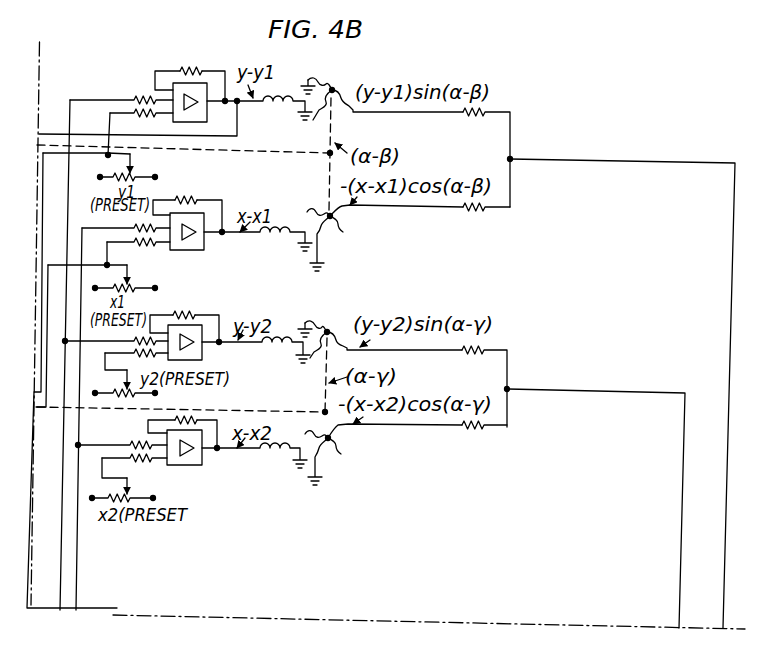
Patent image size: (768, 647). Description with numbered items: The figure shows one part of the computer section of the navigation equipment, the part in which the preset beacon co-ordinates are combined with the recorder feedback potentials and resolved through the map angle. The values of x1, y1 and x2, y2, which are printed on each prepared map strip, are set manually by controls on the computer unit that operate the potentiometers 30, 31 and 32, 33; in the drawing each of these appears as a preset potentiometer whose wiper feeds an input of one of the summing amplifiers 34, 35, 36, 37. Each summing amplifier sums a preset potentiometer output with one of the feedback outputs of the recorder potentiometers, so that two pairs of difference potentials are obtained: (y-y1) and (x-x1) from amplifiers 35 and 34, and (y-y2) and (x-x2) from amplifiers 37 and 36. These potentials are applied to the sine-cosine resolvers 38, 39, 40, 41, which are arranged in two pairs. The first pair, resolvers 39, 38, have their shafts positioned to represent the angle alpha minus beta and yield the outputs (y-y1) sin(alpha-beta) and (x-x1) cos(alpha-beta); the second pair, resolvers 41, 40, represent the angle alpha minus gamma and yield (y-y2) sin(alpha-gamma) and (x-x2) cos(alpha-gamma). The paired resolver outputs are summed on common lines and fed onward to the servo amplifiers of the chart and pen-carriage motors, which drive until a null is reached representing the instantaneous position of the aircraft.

The potentiometer 30 is at (128, 277).
The potentiometer 31 is at (133, 163).
The potentiometer 32 is at (131, 496).
The potentiometer 33 is at (128, 386).
The summing amplifier 34 is at (203, 214).
The summing amplifier 35 is at (200, 92).
The summing amplifier 36 is at (203, 459).
The summing amplifier 37 is at (194, 328).
The sine-cosine resolver 38 is at (343, 218).
The sine-cosine resolver 39 is at (339, 86).
The sine-cosine resolver 40 is at (341, 438).
The sine-cosine resolver 41 is at (339, 323).